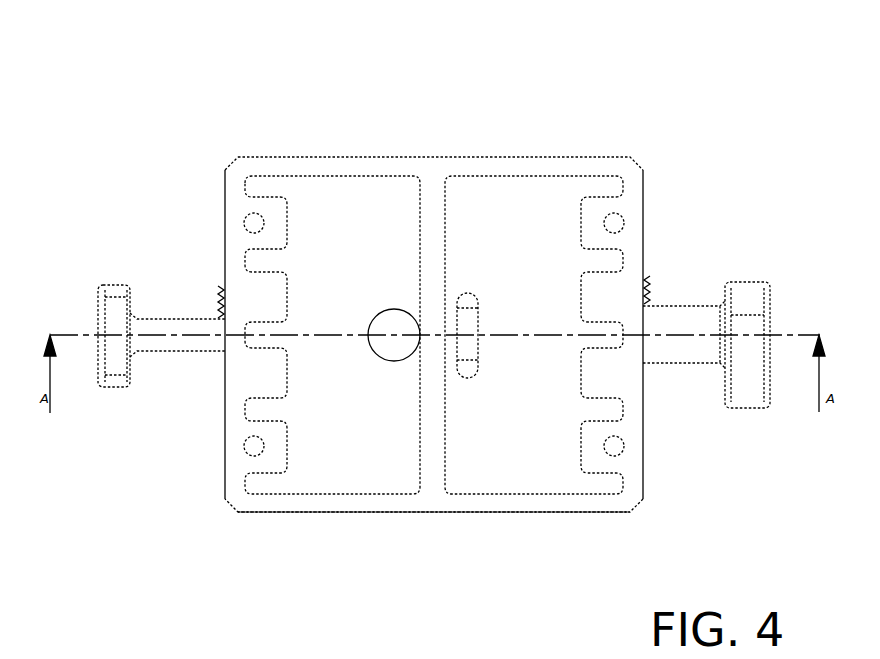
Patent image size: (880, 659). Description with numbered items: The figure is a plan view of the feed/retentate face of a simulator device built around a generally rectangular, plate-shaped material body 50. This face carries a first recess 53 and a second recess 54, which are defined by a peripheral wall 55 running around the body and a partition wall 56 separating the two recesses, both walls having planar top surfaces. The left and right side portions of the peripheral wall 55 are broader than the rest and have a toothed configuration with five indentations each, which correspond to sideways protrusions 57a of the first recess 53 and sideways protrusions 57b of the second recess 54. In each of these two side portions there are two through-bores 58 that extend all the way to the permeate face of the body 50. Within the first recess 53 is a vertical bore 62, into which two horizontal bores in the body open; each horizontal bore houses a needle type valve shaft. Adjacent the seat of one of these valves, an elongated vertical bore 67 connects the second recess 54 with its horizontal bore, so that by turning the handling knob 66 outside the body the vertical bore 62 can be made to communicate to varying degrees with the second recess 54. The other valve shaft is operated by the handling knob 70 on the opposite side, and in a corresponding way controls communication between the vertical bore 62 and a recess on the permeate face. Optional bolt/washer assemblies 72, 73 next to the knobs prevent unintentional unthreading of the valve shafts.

The material body 50 is at (440, 156).
The first recess 53 is at (342, 208).
The second recess 54 is at (515, 208).
The peripheral wall 55 is at (342, 498).
The partition wall 56 is at (433, 418).
The sideways protrusions of first recess 57a is at (262, 185).
The sideways protrusions of second recess 57b is at (608, 406).
The through-bores 58 is at (261, 221).
The vertical bore 62 is at (387, 295).
The handling knob 66 is at (773, 299).
The vertical elongated bore 67 is at (470, 335).
The handling knob 70 is at (98, 295).
The bolt/washer assembly 72 is at (653, 289).
The bolt/washer assembly 73 is at (215, 303).